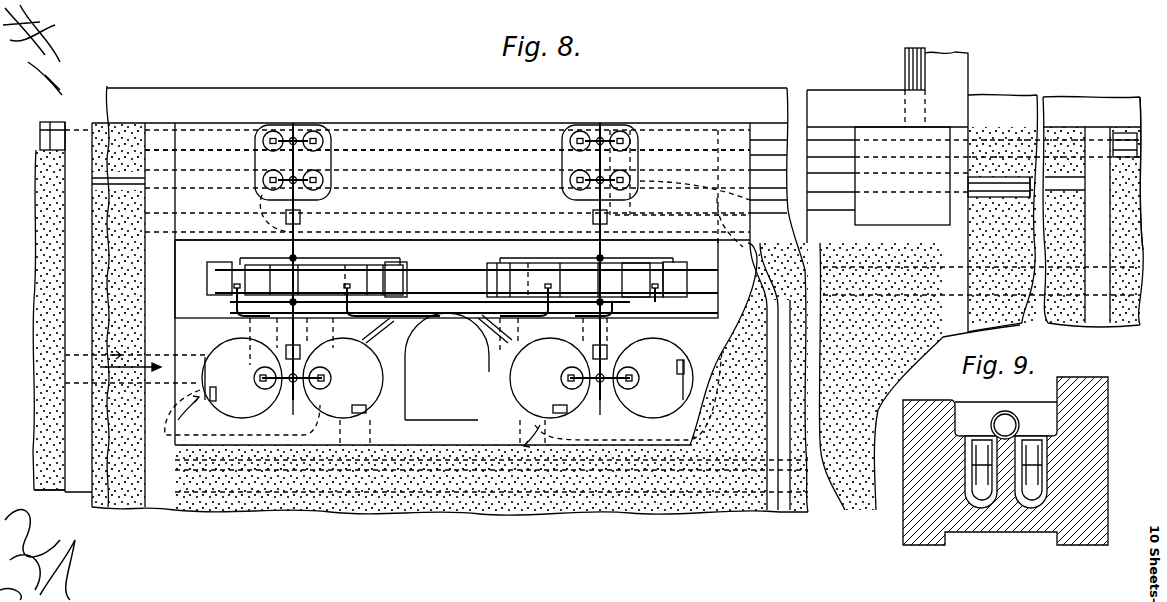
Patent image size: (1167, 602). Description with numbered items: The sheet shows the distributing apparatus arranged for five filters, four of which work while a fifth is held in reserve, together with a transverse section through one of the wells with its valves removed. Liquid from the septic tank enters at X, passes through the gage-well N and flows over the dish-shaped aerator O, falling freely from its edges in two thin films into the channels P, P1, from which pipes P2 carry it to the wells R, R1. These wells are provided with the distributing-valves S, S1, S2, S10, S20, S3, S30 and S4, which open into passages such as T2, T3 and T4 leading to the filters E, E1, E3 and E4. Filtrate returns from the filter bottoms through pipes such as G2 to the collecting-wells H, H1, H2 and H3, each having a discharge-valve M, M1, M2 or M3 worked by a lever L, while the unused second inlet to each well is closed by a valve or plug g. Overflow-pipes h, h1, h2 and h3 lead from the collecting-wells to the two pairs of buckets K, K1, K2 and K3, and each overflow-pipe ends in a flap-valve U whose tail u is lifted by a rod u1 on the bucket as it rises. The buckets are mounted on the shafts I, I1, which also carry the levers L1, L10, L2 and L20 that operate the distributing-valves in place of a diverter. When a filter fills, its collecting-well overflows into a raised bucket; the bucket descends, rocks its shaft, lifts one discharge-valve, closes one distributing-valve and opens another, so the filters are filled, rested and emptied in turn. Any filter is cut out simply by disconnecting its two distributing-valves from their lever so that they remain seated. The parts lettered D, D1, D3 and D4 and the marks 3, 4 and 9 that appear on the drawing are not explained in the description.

In FIG. 8, the distributing-valve S is at (318, 131).
In FIG. 8, the distributing-valve S1 is at (264, 194).
In FIG. 8, the distributing-valve S2 is at (270, 131).
In FIG. 8, the distributing-valve S3 is at (571, 184).
In FIG. 8, the distributing-valve S4 is at (574, 132).
In FIG. 8, the distributing-valve S10 is at (324, 182).
In FIG. 8, the distributing-valve S20 is at (626, 131).
In FIG. 8, the distributing-valve S30 is at (631, 181).
In FIG. 8, the lever L1 is at (291, 131).
In FIG. 8, the lever L2 is at (312, 177).
In FIG. 8, the lever L10 is at (598, 131).
In FIG. 8, the lever L20 is at (580, 176).
In FIG. 8, the lever L is at (280, 395).
In FIG. 8, the well R is at (562, 141).
In FIG. 9, the well R is at (1019, 422).
In FIG. 8, the collecting-well R1 is at (333, 141).
In FIG. 8, the drain pipe D is at (45, 139).
In FIG. 8, the drain pipe D1 is at (95, 180).
In FIG. 8, the drain pipe D3 is at (1060, 183).
In FIG. 8, the drain pipe D4 is at (1137, 147).
In FIG. 8, the passage T2 is at (437, 208).
In FIG. 8, the passage T3 is at (990, 185).
In FIG. 8, the passage T4 is at (575, 166).
In FIG. 8, the filter E is at (42, 247).
In FIG. 8, the filter E1 is at (65, 445).
In FIG. 8, the filter E3 is at (483, 510).
In FIG. 8, the filter E4 is at (1140, 174).
In FIG. 8, the channel P is at (828, 137).
In FIG. 8, the channel P1 is at (845, 207).
In FIG. 8, the pipe P2 is at (436, 148).
In FIG. 9, the pipe P2 is at (996, 424).
In FIG. 8, the inlet X is at (903, 75).
In FIG. 8, the gage-well N is at (999, 176).
In FIG. 8, the aerator O is at (845, 186).
In FIG. 8, the flap-valve U is at (207, 291).
In FIG. 8, the bucket K is at (219, 278).
In FIG. 8, the bucket K1 is at (407, 283).
In FIG. 8, the bucket K2 is at (487, 283).
In FIG. 8, the bucket K3 is at (687, 283).
In FIG. 8, the tail u is at (240, 291).
In FIG. 8, the rod u1 is at (344, 289).
In FIG. 8, the overflow-pipe h is at (545, 308).
In FIG. 8, the overflow-pipe h1 is at (660, 310).
In FIG. 8, the overflow-pipe h2 is at (480, 336).
In FIG. 8, the overflow-pipe h3 is at (230, 303).
In FIG. 8, the collecting-well H is at (242, 378).
In FIG. 8, the collecting-well H1 is at (343, 378).
In FIG. 8, the collecting-well H2 is at (550, 378).
In FIG. 8, the collecting-well H3 is at (653, 378).
In FIG. 8, the discharge-valve M is at (256, 386).
In FIG. 8, the discharge-valve M1 is at (330, 386).
In FIG. 8, the discharge-valve M2 is at (562, 386).
In FIG. 8, the discharge-valve M3 is at (636, 387).
In FIG. 8, the valve or plug g is at (216, 400).
In FIG. 8, the shaft I is at (298, 412).
In FIG. 8, the shaft I1 is at (568, 412).
In FIG. 8, the pipe 9 is at (390, 410).
In FIG. 8, the pipe 4 is at (838, 383).
In FIG. 8, the pipe 3 is at (776, 430).
In FIG. 8, the pipe G2 is at (441, 482).